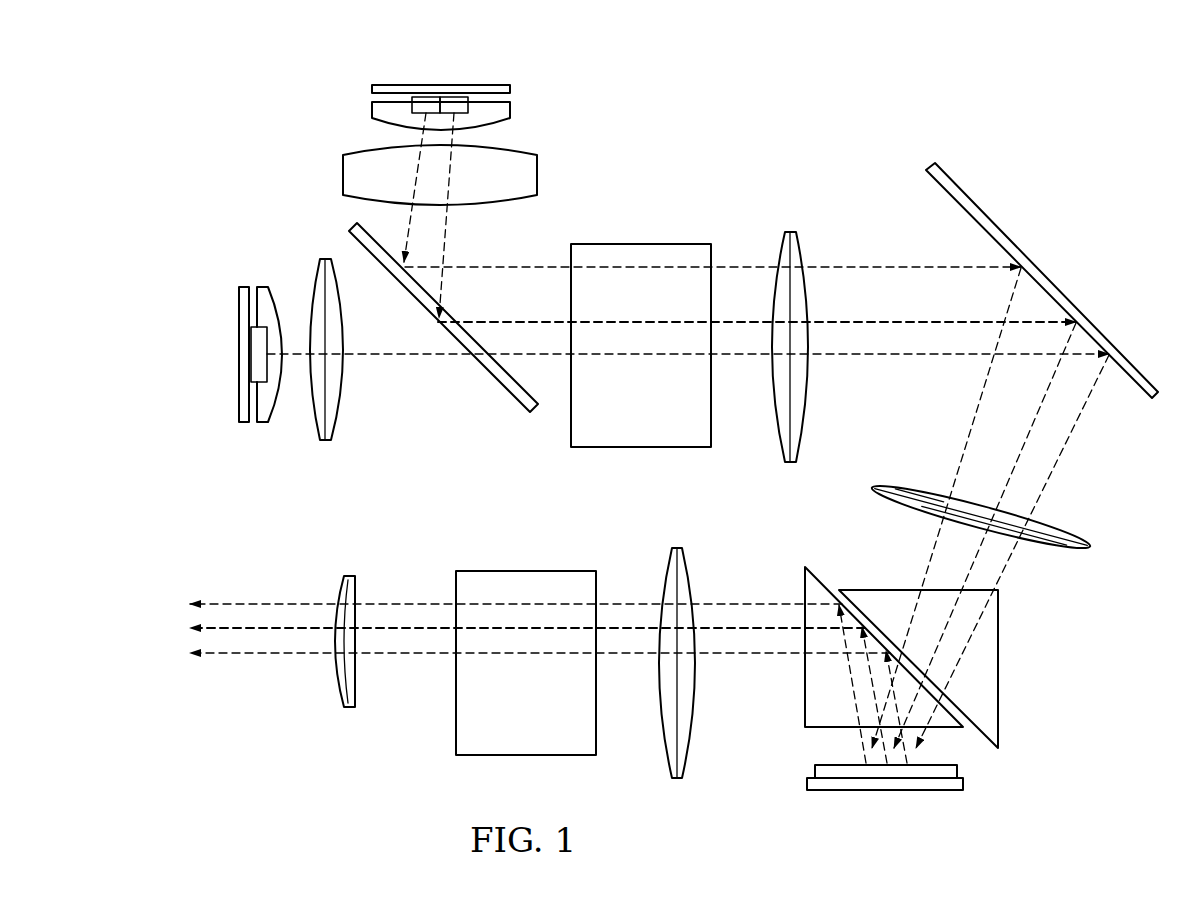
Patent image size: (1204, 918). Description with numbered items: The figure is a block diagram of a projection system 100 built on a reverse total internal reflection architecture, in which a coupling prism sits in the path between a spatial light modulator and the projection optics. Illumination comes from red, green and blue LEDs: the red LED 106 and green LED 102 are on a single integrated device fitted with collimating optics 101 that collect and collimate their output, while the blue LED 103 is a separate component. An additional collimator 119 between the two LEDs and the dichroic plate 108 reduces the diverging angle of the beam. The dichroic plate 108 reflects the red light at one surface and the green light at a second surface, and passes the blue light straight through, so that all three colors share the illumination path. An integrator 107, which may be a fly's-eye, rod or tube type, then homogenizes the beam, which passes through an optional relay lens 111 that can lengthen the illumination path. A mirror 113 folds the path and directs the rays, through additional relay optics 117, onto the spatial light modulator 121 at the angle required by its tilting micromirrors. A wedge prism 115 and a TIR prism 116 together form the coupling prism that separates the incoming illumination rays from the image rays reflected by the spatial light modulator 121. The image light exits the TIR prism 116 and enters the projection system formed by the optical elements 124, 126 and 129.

The projection system 100 is at (1030, 105).
The collimating optics 101 is at (372, 107).
The green LED 102 is at (457, 97).
The red LED 106 is at (423, 97).
The collimator 119 is at (343, 175).
The blue LED 103 is at (258, 343).
The dichroic plate 108 is at (488, 377).
The integrator 107 is at (636, 244).
The relay lens 111 is at (788, 232).
The mirror 113 is at (978, 208).
The relay optics 117 is at (1095, 546).
The wedge prism 115 is at (998, 670).
The TIR prism 116 is at (805, 707).
The spatial light modulator 121 is at (886, 790).
The optical element 124 is at (677, 778).
The optical element 126 is at (522, 755).
The optical element 129 is at (350, 707).